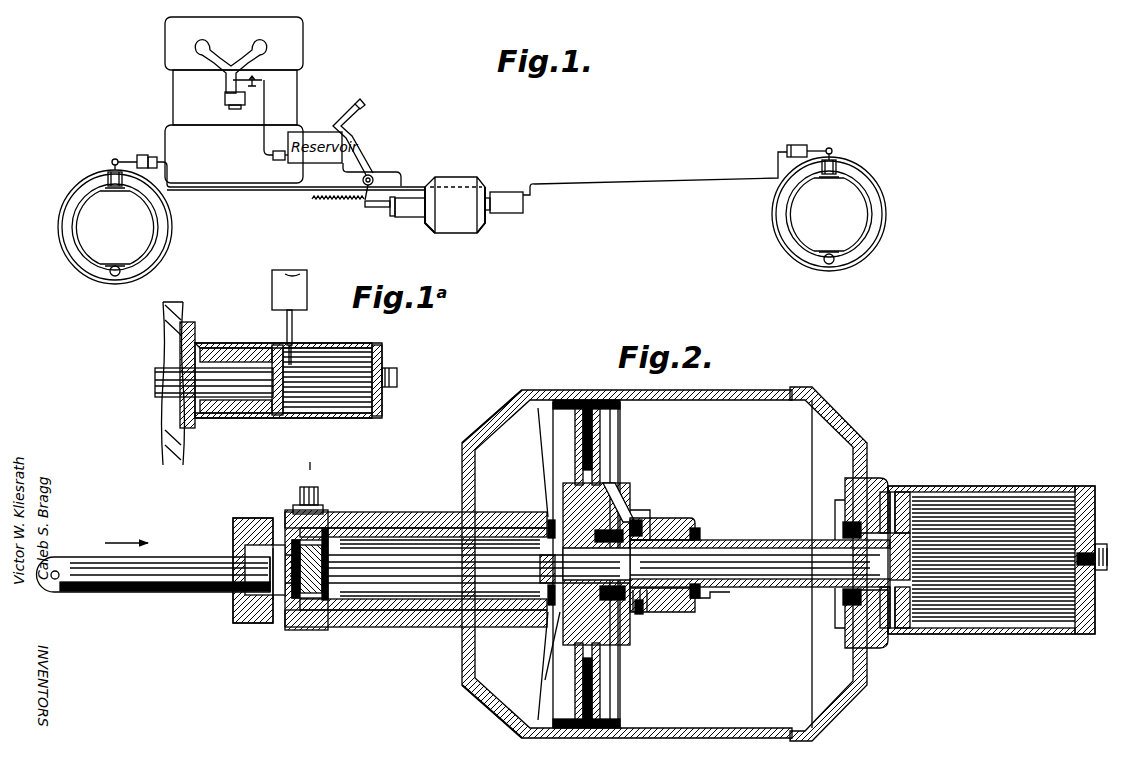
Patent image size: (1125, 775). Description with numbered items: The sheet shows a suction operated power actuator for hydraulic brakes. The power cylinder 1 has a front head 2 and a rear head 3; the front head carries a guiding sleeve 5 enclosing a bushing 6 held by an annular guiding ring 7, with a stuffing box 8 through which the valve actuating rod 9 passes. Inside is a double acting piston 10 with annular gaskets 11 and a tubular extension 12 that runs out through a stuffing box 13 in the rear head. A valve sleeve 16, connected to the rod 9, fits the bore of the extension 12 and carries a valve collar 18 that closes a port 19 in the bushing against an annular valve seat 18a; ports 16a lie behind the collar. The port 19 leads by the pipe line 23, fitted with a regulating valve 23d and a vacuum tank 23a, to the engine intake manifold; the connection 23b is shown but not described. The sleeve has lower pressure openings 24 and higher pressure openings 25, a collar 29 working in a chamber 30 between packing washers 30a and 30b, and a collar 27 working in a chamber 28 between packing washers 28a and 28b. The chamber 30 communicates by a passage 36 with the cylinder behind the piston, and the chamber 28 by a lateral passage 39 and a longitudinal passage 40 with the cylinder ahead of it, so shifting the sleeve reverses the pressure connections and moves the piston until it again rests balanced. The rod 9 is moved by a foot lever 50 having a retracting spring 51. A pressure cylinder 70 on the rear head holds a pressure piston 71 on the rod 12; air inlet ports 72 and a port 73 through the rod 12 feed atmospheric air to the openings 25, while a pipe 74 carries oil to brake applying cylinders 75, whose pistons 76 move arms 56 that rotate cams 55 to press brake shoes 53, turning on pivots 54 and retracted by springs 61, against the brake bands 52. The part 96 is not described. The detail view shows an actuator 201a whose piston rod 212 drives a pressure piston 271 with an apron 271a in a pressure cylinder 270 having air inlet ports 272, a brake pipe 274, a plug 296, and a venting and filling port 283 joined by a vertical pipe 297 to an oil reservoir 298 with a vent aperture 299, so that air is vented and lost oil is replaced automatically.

In FIG. 1, the power cylinder 1 is at (462, 177).
In FIG. 2, the power cylinder 1 is at (705, 390).
In FIG. 1, the front head 2 is at (430, 230).
In FIG. 2, the front head 2 is at (485, 426).
In FIG. 1, the rear head 3 is at (480, 230).
In FIG. 2, the rear head 3 is at (850, 430).
In FIG. 1, the guiding sleeve 5 is at (405, 217).
In FIG. 2, the guiding sleeve 5 is at (440, 512).
In FIG. 2, the bushing 6 is at (380, 530).
In FIG. 2, the annular guiding ring 7 is at (550, 605).
In FIG. 2, the stuffing box 8 is at (245, 623).
In FIG. 1, the valve actuating rod 9 is at (378, 207).
In FIG. 2, the valve actuating rod 9 is at (168, 592).
In FIG. 2, the double acting piston 10 is at (600, 458).
In FIG. 2, the annular gaskets 11 is at (590, 400).
In FIG. 2, the tubular extension 12 is at (775, 588).
In FIG. 2, the stuffing box 13 is at (855, 610).
In FIG. 2, the valve sleeve 16 is at (460, 598).
In FIG. 2, the ports 16a is at (235, 590).
In FIG. 2, the valve collar 18 is at (330, 600).
In FIG. 2, the annular valve seat 18a is at (288, 626).
In FIG. 2, the port 19 is at (328, 530).
In FIG. 1, the pipe line 23 is at (262, 132).
In FIG. 1A, the pipe line 23 is at (309, 470).
In FIG. 2, the pipe line 23 is at (310, 487).
In FIG. 1, the vacuum tank 23a is at (353, 134).
In FIG. 1, the pipe connection 23b is at (279, 162).
In FIG. 1, the regulating valve 23d is at (266, 77).
In FIG. 2, the lower pressure openings 24 is at (540, 585).
In FIG. 2, the higher pressure openings 25 is at (640, 530).
In FIG. 2, the valve collar 27 is at (650, 606).
In FIG. 2, the chamber 28 is at (690, 606).
In FIG. 2, the packing washer 28a is at (650, 612).
In FIG. 2, the packing washer 28b is at (695, 530).
In FIG. 2, the valve collar 29 is at (618, 505).
In FIG. 2, the chamber 30 is at (625, 600).
In FIG. 2, the packing washer 30a is at (552, 522).
In FIG. 2, the packing washer 30b is at (645, 516).
In FIG. 2, the passage 36 is at (640, 508).
In FIG. 2, the lateral passage 39 is at (642, 606).
In FIG. 2, the longitudinal passage 40 is at (556, 632).
In FIG. 1, the foot lever 50 is at (360, 99).
In FIG. 1, the retracting spring 51 is at (345, 200).
In FIG. 1, the brake band 52 is at (166, 262).
In FIG. 1, the brake shoes 53 is at (158, 230).
In FIG. 1, the pivot 54 is at (115, 276).
In FIG. 1, the cam 55 is at (116, 187).
In FIG. 1, the arm 56 is at (111, 162).
In FIG. 1, the retracting spring 61 is at (115, 266).
In FIG. 1, the pressure cylinder 70 is at (514, 213).
In FIG. 2, the pressure cylinder 70 is at (1010, 634).
In FIG. 2, the pressure piston 71 is at (905, 630).
In FIG. 2, the air inlet ports 72 is at (893, 492).
In FIG. 2, the port 73 is at (845, 525).
In FIG. 1, the pipe 74 is at (238, 190).
In FIG. 2, the pipe 74 is at (1106, 570).
In FIG. 1, the brake applying cylinder 75 is at (142, 154).
In FIG. 1, the piston 76 is at (153, 156).
In FIG. 2, the cylinder head 96 is at (1062, 486).
In FIG. 1A, the actuator 201a is at (163, 348).
In FIG. 1A, the piston rod 212 is at (170, 398).
In FIG. 1A, the pressure cylinder 270 is at (330, 415).
In FIG. 1A, the pressure piston 271 is at (278, 415).
In FIG. 1A, the apron 271a is at (228, 415).
In FIG. 1A, the air inlet ports 272 is at (200, 344).
In FIG. 1A, the pipe 274 is at (397, 378).
In FIG. 1A, the combined venting and filling port 283 is at (296, 343).
In FIG. 1A, the plug 296 is at (368, 343).
In FIG. 1A, the vertical pipe 297 is at (285, 325).
In FIG. 1A, the oil reservoir 298 is at (300, 296).
In FIG. 1A, the vent aperture 299 is at (300, 272).